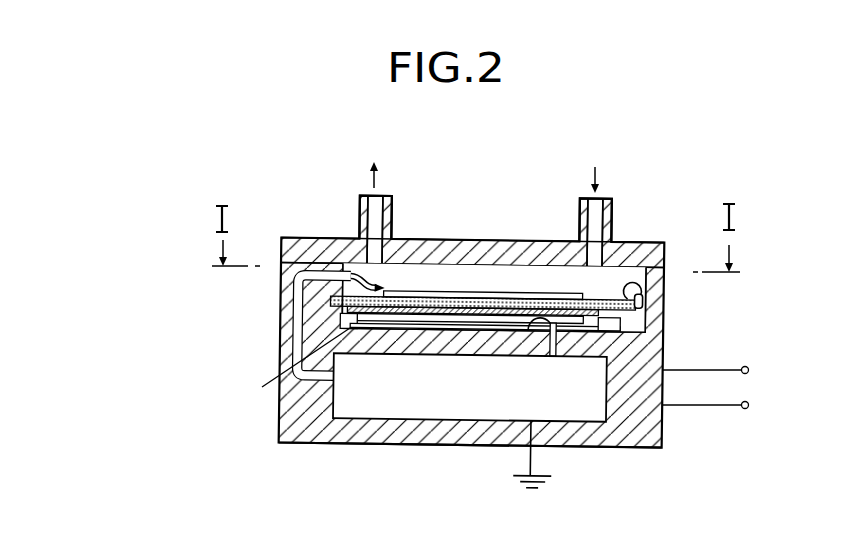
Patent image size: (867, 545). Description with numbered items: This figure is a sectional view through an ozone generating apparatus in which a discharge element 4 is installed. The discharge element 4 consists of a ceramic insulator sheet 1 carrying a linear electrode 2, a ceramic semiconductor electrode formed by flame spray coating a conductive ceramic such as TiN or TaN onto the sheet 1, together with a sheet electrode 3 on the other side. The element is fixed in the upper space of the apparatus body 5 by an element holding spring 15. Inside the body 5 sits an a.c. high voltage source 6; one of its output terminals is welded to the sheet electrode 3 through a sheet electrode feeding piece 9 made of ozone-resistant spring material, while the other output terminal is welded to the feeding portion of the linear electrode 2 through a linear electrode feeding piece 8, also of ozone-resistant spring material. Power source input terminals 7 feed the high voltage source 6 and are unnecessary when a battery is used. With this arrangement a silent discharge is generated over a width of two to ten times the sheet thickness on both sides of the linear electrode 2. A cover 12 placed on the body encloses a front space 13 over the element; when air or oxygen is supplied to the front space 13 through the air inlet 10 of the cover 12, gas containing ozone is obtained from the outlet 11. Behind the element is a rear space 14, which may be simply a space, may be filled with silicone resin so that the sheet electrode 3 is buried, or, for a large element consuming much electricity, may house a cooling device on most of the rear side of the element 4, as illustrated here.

The ceramic insulator sheet 1 is at (606, 296).
The linear electrode 2 is at (440, 291).
The sheet electrode 3 is at (627, 328).
The discharge element 4 is at (545, 298).
The apparatus body 5 is at (633, 433).
The a.c. high voltage source 6 is at (360, 404).
The power source input terminals 7 is at (749, 372).
The linear electrode feeding piece 8 is at (362, 274).
The sheet electrode feeding piece 9 is at (534, 331).
The air inlet 10 is at (598, 217).
The outlet 11 is at (376, 209).
The cover 12 is at (416, 262).
The front space 13 is at (472, 278).
The rear space 14 is at (293, 322).
The element holding spring 15 is at (652, 288).